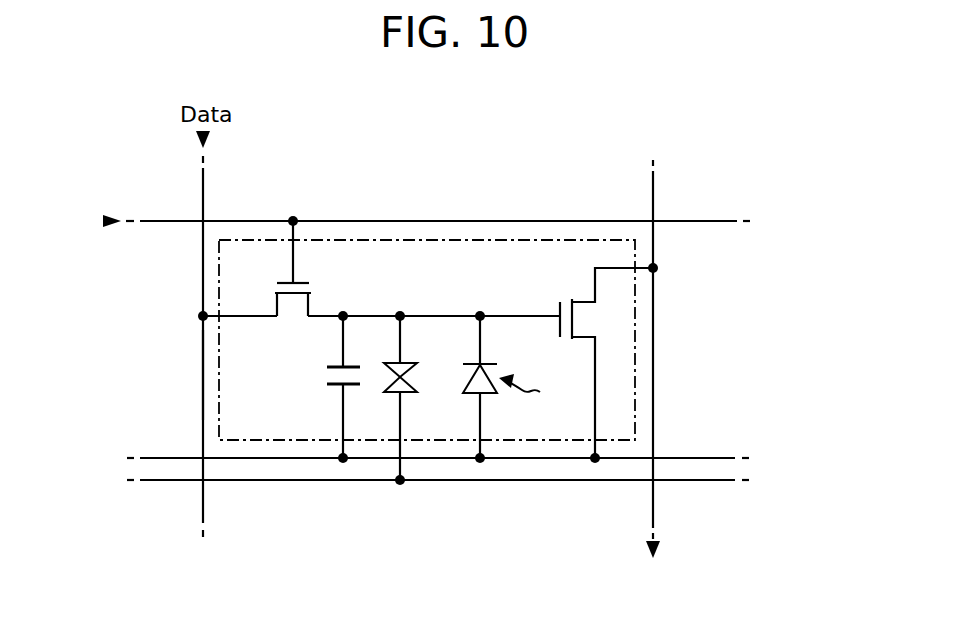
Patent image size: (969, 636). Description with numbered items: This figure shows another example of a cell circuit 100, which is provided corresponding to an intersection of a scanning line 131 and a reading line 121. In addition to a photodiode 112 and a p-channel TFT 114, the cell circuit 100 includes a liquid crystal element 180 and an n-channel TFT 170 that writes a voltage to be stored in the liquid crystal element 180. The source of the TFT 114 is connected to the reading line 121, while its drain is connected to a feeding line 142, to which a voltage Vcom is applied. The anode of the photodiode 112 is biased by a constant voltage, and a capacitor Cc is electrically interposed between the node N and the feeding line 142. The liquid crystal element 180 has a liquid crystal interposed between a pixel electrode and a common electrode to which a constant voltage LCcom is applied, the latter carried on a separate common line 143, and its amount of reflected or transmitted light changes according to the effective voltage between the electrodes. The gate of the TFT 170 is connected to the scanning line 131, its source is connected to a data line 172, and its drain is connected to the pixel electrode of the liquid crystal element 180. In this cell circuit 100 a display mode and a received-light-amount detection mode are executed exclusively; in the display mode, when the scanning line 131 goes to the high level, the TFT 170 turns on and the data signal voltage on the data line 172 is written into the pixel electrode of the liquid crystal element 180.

The cell circuit 100 is at (636, 312).
The photodiode 112 is at (462, 384).
The TFT 114 is at (572, 294).
The reading line 121 is at (653, 378).
The scanning line 131 is at (688, 220).
The feeding line 142 is at (690, 458).
The LCcom line 143 is at (690, 482).
The TFT 170 is at (284, 316).
The data line 172 is at (202, 378).
The liquid crystal element 180 is at (404, 394).
The capacitor Cc is at (325, 387).